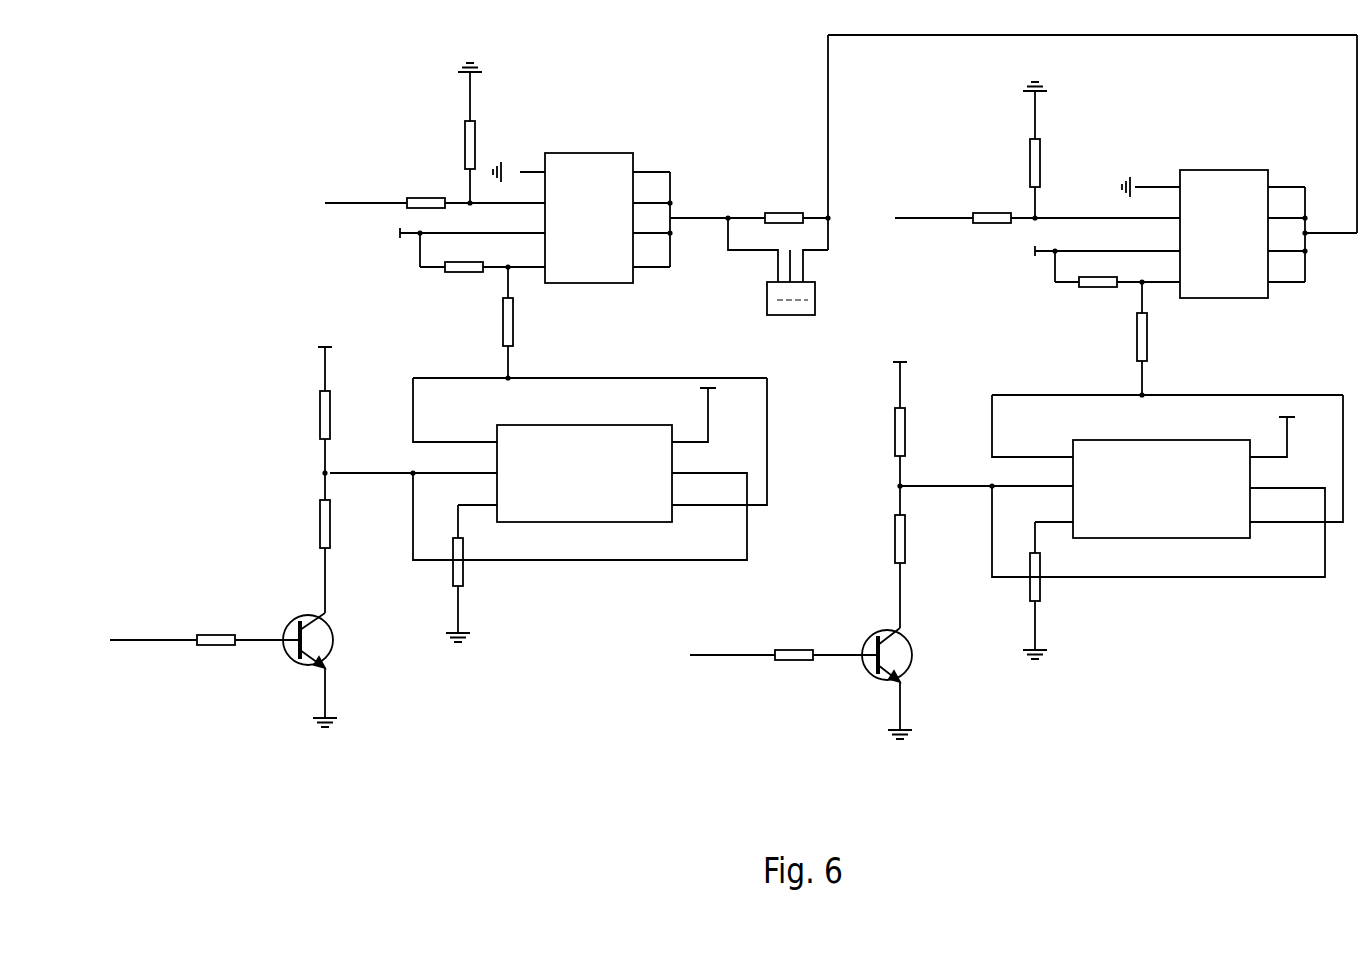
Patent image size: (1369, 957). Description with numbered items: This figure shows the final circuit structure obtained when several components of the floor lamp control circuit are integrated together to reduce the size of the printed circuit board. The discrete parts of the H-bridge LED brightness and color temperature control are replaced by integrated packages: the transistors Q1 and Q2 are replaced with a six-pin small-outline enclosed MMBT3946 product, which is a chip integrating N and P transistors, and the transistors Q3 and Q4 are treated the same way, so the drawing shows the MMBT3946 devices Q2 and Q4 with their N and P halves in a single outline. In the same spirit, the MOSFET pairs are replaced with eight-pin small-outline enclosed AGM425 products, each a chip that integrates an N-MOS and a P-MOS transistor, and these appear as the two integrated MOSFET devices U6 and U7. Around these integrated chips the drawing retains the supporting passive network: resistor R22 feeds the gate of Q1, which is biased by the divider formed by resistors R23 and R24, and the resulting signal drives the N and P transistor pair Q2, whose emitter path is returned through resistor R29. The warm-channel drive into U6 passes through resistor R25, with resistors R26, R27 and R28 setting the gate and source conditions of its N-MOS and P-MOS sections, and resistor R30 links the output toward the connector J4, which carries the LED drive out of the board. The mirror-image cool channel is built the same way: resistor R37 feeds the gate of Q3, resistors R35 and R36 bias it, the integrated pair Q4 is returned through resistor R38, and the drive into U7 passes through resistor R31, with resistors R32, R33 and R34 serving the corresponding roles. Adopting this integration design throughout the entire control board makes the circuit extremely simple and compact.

The dual MOSFET AGM4255M (warm channel) U6 is at (583, 220).
The dual MOSFET AGM4255M (cool channel) U7 is at (1239, 236).
The resistor 10K WARM1 gate R25 is at (435, 203).
The resistor 10K pull-down R26 is at (475, 133).
The resistor 10K R27 is at (449, 255).
The resistor 10R R28 is at (516, 322).
The resistor 10K LED-A1 R30 is at (1013, 142).
The connector CON3 J4 is at (778, 281).
The resistor 10K COOL1 gate R31 is at (1037, 217).
The resistor 10K pull-down R32 is at (1040, 150).
The resistor 10K R33 is at (1083, 272).
The resistor 10R R34 is at (1150, 338).
The transistor Q2 is at (548, 459).
The resistor 100R R29 is at (471, 573).
The resistor 4.7K R23 is at (324, 400).
The resistor 4.7K R24 is at (334, 541).
The transistor Q1 is at (286, 670).
The resistor 100K R22 is at (172, 640).
The resistor 4.7K R35 is at (900, 414).
The resistor 4.7K R36 is at (943, 555).
The transistor Q3 is at (862, 683).
The resistor 100R R37 is at (751, 655).
The transistor Q4 is at (1166, 484).
The resistor 100R R38 is at (1048, 590).